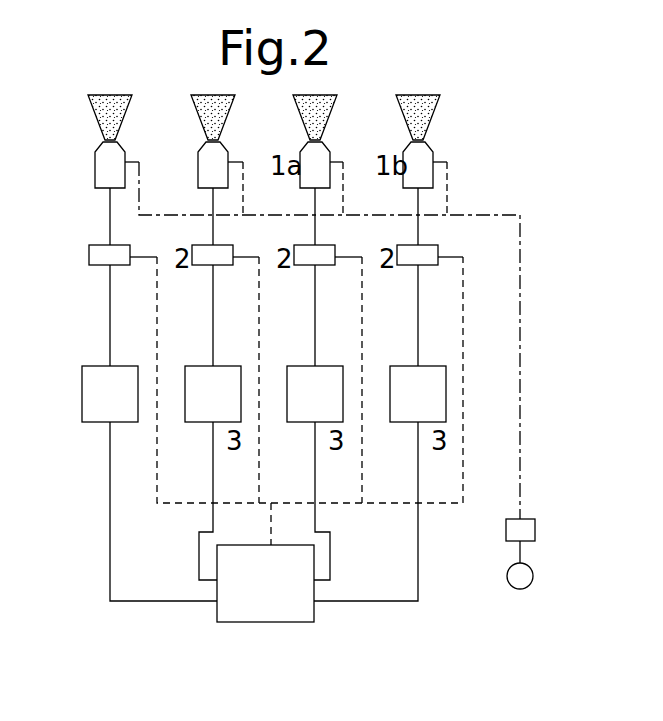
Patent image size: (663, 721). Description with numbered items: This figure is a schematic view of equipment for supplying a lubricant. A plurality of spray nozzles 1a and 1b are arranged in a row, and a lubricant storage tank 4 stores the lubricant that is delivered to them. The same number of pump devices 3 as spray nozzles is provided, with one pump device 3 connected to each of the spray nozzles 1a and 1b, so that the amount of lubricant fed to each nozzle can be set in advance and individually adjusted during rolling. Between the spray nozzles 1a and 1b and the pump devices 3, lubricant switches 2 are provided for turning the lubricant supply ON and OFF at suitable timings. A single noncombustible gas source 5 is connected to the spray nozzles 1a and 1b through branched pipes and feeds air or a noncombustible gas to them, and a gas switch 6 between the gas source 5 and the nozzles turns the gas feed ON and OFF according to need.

The spray nozzle 1a is at (204, 141).
The spray nozzle 1b is at (99, 141).
The lubricant switch 2 is at (113, 259).
The pump device 3 is at (111, 411).
The lubricant storage tank 4 is at (265, 601).
The noncombustible gas source 5 is at (532, 578).
The gas switch 6 is at (531, 533).